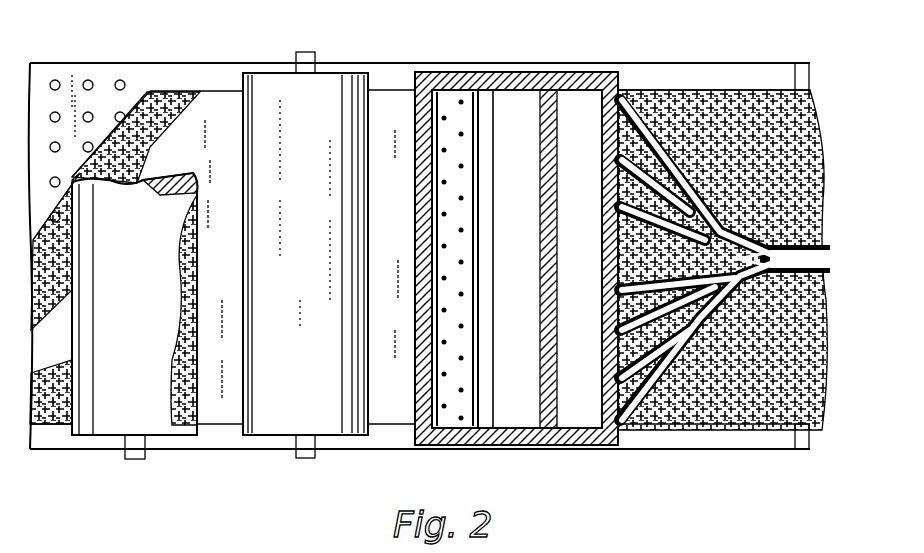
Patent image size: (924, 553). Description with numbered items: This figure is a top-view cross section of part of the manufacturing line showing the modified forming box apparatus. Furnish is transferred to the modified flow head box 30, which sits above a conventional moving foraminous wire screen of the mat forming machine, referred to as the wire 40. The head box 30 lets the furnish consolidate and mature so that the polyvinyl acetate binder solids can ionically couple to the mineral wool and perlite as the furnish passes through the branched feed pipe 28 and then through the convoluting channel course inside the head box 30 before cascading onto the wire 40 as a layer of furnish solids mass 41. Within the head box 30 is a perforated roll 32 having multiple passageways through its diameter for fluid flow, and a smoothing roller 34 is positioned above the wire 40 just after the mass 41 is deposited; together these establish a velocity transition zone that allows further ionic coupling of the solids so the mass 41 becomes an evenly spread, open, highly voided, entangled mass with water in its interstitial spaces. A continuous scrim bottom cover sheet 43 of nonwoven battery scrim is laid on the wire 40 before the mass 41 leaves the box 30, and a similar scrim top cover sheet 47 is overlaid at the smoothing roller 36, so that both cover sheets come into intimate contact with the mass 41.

The branched feed pipe 28 is at (668, 117).
The modified flow head box 30 is at (597, 447).
The perforated roll 32 is at (450, 96).
The smoothing roller 34 is at (355, 425).
The smoothing roller 36 is at (118, 415).
The wire 40 is at (107, 76).
The layer of furnish solids mass 41 is at (217, 103).
The scrim bottom cover sheet 43 is at (173, 97).
The scrim top cover sheet 47 is at (57, 425).